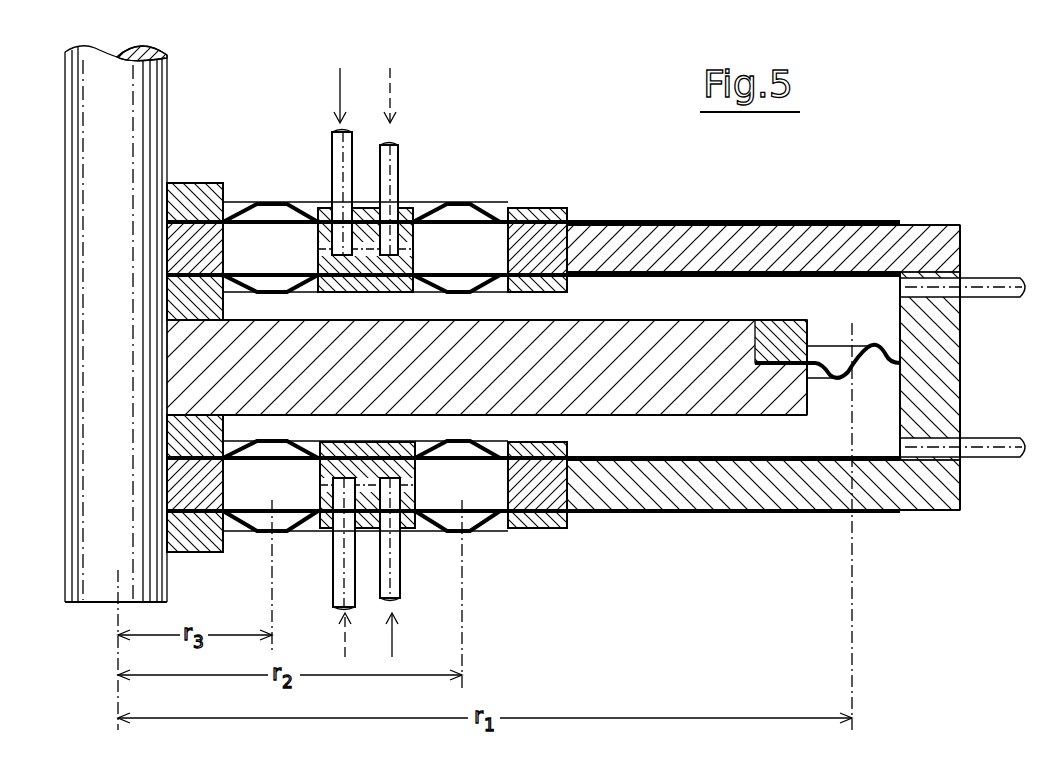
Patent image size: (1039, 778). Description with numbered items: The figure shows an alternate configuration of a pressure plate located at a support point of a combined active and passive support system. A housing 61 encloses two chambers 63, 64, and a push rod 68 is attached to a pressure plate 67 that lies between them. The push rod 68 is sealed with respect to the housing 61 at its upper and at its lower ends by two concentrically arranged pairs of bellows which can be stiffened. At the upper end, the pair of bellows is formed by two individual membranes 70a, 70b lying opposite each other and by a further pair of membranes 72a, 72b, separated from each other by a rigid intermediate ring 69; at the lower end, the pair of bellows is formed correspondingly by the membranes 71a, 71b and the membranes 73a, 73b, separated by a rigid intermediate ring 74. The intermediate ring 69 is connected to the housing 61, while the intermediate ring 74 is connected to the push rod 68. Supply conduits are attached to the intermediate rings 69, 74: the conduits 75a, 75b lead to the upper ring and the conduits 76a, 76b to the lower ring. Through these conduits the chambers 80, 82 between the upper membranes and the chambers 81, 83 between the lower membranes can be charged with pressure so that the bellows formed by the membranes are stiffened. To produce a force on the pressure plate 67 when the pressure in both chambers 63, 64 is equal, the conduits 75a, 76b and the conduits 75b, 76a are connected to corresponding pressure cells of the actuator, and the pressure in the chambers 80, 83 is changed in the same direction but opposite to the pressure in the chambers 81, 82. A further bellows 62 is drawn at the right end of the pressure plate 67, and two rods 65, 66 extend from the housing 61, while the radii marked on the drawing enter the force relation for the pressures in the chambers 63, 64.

The housing 61 is at (699, 505).
The bellows 62 is at (863, 342).
The chamber 63 is at (697, 308).
The chamber 64 is at (730, 450).
The upper output pin 65 is at (977, 293).
The lower output pin 66 is at (990, 447).
The pressure plate 67 is at (740, 332).
The push rod 68 is at (157, 113).
The intermediate ring 69 is at (368, 257).
The membrane 70a is at (262, 200).
The membrane 70b is at (290, 296).
The membrane 71a is at (250, 537).
The membrane 71b is at (278, 441).
The membrane 72a is at (468, 203).
The membrane 72b is at (473, 293).
The membrane 73a is at (478, 532).
The membrane 73b is at (462, 442).
The intermediate ring 74 is at (365, 478).
The conduit 75a is at (337, 153).
The conduit 75b is at (395, 150).
The conduit 76a is at (343, 553).
The conduit 76b is at (422, 553).
The chamber 80 is at (276, 265).
The chamber 81 is at (270, 497).
The chamber 82 is at (466, 265).
The chamber 83 is at (458, 497).